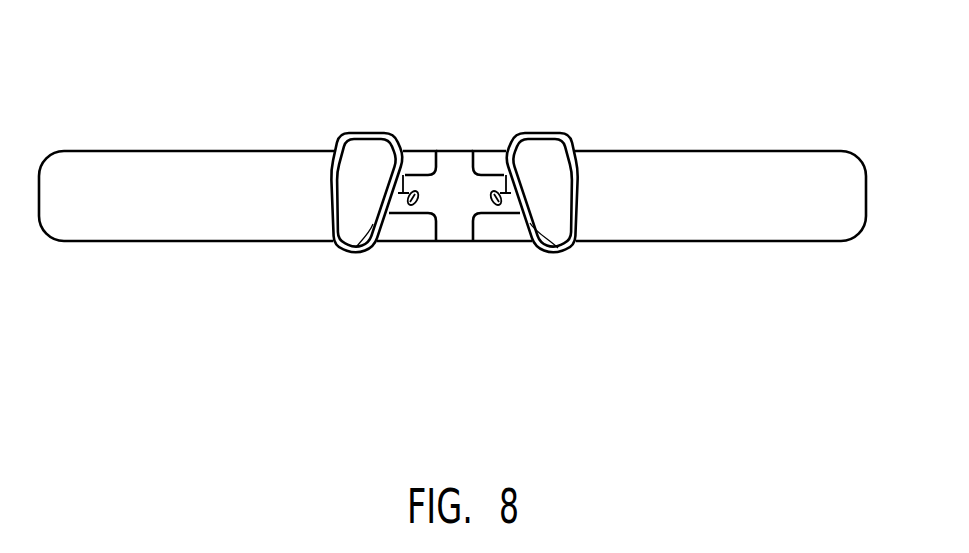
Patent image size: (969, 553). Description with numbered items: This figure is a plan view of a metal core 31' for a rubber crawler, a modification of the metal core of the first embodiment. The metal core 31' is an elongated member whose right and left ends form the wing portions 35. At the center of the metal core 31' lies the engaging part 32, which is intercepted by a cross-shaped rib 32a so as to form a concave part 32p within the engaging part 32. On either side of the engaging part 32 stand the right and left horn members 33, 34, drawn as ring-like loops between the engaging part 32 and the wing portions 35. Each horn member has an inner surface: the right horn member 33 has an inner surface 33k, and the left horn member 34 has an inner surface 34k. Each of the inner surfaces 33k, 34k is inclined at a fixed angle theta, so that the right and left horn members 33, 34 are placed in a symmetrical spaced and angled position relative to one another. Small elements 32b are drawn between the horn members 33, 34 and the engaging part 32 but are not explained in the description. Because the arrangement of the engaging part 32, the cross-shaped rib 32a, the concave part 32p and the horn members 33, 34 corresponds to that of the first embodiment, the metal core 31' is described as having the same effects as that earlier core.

The metal core 31' is at (452, 177).
The engaging part 32 is at (456, 190).
The cross-shaped rib 32a is at (457, 158).
The pins 32b is at (486, 190).
The concave part 32p is at (502, 227).
The right horn member 33 is at (543, 157).
The inner surface of right horn member 33k is at (558, 248).
The left horn member 34 is at (365, 158).
The inner surface of left horn member 34k is at (356, 247).
The wing portions 35 is at (132, 165).